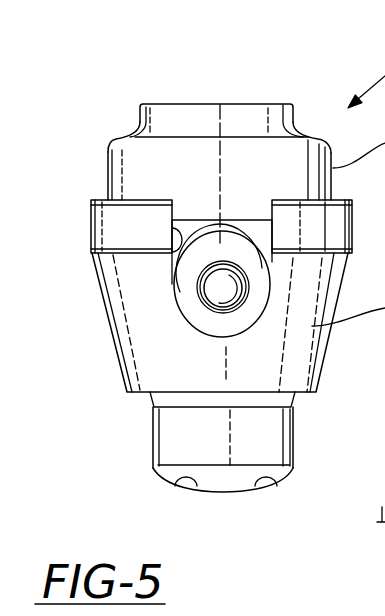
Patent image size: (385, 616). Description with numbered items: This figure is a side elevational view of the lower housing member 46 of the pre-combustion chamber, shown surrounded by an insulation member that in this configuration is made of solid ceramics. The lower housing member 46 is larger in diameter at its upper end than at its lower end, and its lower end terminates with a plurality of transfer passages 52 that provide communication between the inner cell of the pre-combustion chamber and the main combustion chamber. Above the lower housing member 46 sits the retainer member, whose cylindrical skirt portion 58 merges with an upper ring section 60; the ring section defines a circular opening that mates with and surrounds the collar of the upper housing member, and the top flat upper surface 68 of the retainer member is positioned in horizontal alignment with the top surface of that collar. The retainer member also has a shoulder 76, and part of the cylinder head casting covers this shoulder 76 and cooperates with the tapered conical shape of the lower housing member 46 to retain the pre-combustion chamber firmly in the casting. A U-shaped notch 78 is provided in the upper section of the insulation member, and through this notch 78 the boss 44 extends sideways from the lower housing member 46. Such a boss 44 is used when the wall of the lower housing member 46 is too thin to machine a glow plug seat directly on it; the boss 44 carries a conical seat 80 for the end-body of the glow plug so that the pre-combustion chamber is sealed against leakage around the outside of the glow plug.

The boss 44 is at (192, 280).
The lower housing member 46 is at (157, 430).
The transfer passages 52 is at (187, 487).
The cylindrical skirt portion 58 is at (122, 173).
The upper ring section 60 is at (281, 116).
The top flat upper surface 68 is at (195, 103).
The shoulder 76 is at (116, 143).
The U-shaped notch 78 is at (172, 252).
The conical seat 80 is at (218, 295).